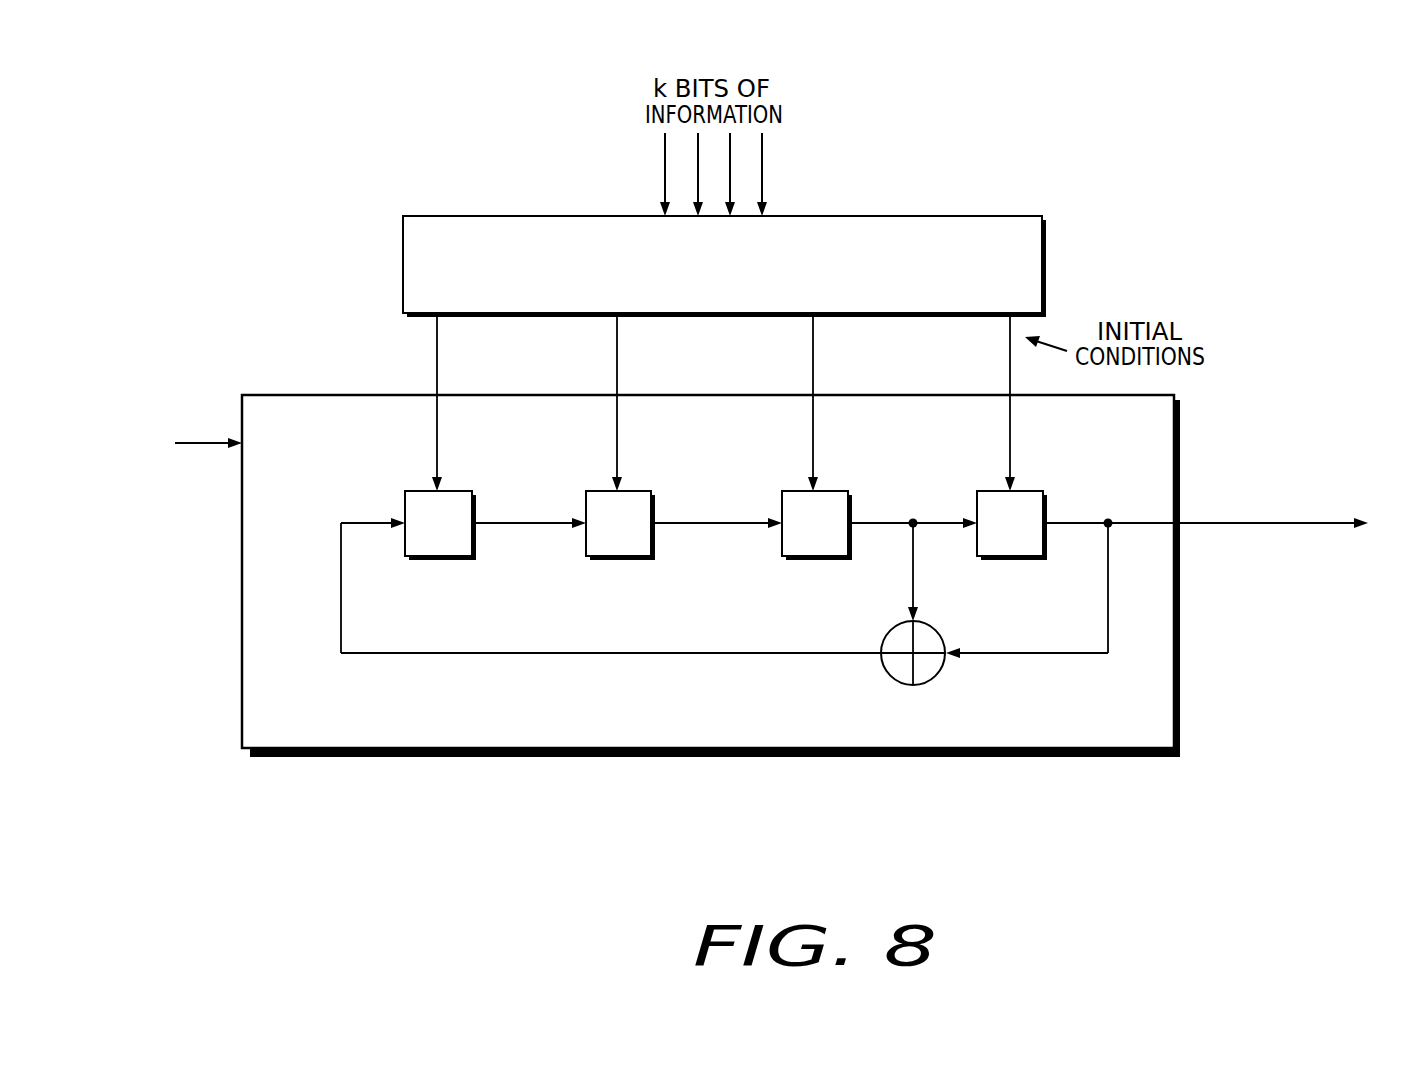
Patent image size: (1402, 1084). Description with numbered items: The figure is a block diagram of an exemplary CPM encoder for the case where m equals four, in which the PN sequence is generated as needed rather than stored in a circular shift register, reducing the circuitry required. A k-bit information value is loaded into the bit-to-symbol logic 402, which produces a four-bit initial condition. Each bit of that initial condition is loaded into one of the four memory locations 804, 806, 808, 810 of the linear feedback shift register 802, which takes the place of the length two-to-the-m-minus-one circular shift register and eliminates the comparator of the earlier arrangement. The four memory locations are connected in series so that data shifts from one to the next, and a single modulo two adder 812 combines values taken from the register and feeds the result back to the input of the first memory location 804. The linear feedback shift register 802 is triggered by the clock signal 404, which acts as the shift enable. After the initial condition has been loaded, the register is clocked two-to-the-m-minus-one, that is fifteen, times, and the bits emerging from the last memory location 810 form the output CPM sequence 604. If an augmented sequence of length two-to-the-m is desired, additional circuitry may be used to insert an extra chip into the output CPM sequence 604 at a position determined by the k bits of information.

The bit-to-symbol logic 402 is at (1022, 216).
The clock signal 404 is at (190, 443).
The linear feedback shift register 802 is at (1174, 394).
The memory location 804 is at (465, 491).
The memory location 806 is at (641, 491).
The memory location 808 is at (838, 491).
The memory location 810 is at (1033, 491).
The modulo 2 adder 812 is at (935, 629).
The output CPM sequence 604 is at (1318, 524).